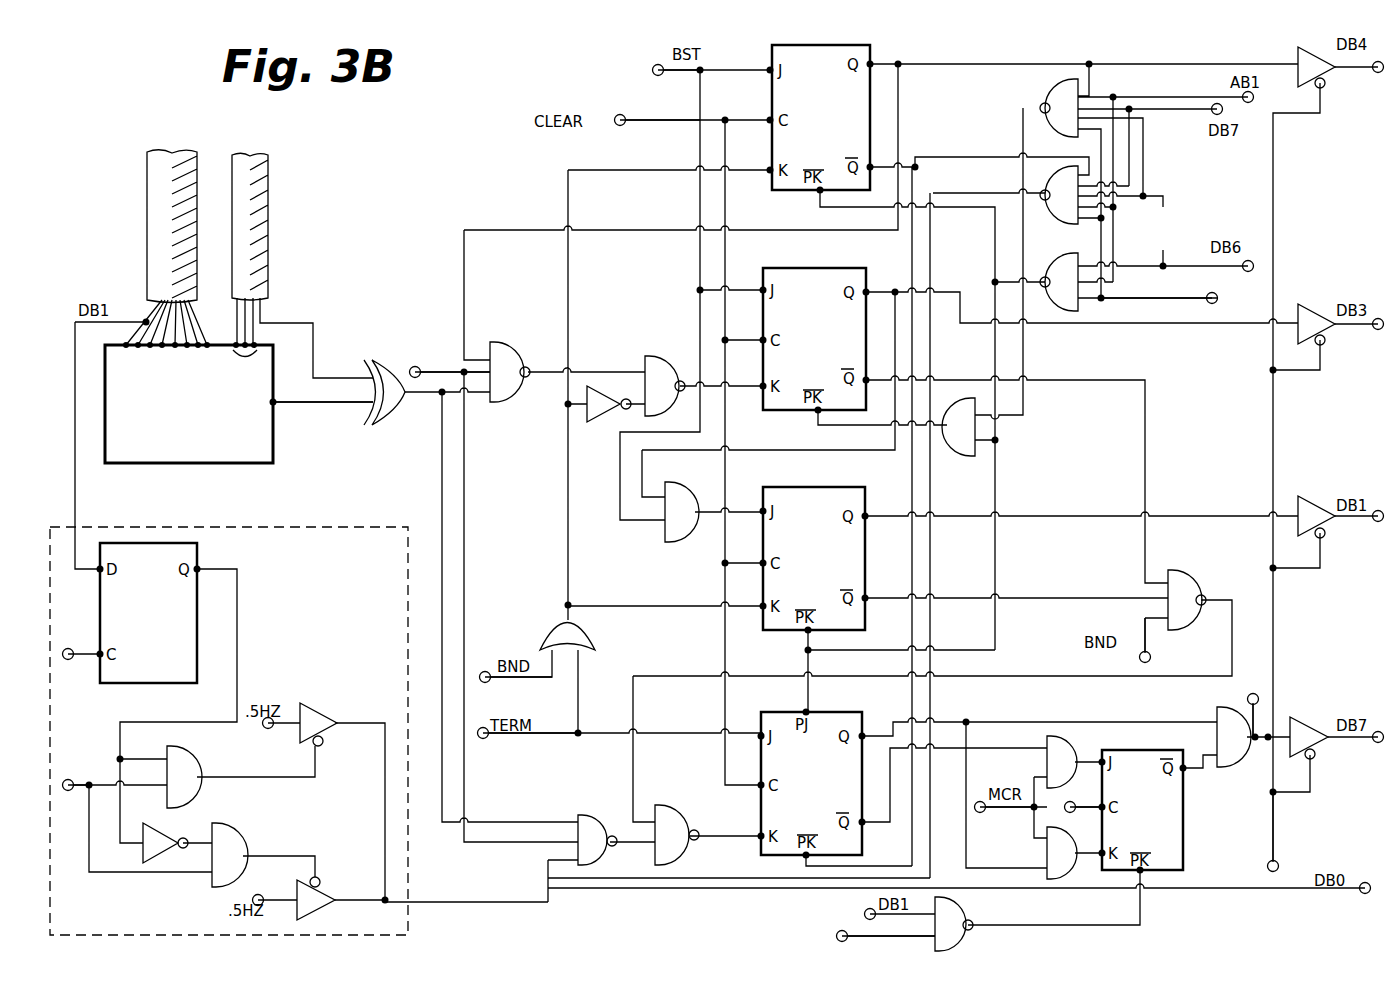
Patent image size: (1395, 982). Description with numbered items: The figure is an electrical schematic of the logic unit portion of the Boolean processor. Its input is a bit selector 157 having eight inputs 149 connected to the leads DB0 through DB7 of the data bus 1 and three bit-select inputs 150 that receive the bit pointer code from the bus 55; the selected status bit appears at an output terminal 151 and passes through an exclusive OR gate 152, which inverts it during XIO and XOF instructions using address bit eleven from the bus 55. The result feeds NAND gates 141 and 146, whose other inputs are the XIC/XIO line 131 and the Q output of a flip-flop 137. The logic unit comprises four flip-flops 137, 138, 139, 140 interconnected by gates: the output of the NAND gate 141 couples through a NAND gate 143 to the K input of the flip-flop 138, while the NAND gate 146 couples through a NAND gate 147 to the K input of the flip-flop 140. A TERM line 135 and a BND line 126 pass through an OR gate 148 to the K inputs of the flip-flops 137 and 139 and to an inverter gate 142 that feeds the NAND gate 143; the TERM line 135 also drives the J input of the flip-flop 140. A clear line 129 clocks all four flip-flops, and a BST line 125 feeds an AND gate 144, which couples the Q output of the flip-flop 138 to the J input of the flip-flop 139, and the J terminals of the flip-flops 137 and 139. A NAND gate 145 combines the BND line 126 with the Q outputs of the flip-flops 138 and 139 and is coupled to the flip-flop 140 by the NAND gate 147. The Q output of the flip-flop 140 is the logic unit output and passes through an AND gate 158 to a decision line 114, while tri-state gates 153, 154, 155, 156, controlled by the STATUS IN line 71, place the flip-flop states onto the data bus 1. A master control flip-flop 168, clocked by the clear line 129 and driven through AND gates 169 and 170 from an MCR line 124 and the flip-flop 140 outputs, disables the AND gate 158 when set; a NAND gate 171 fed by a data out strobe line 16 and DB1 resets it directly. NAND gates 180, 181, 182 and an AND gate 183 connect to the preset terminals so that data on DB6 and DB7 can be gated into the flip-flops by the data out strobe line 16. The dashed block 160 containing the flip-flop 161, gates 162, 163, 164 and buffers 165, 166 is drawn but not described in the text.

The data bus 1 is at (147, 192).
The bus 55 is at (268, 190).
The inputs 149 is at (160, 358).
The bit-select inputs 150 is at (241, 367).
The bit selector 157 is at (238, 474).
The output terminal 151 is at (276, 402).
The exclusive OR gate 152 is at (390, 418).
The XIC/XIO line 131 is at (416, 366).
The NAND gate 141 is at (525, 318).
The inverter gate 142 is at (594, 422).
The NAND gate 143 is at (668, 356).
The AND gate 144 is at (670, 545).
The BST line 125 is at (652, 66).
The clear line 129 is at (624, 115).
The flip-flop 137 is at (838, 112).
The flip-flop 138 is at (832, 334).
The flip-flop 139 is at (832, 556).
The main decision flip-flop 140 is at (830, 780).
The OR gate 148 is at (598, 632).
The BND line 126 is at (489, 670).
The TERM line 135 is at (486, 740).
The NAND gate 146 is at (590, 812).
The NAND gate 147 is at (700, 794).
The D flip-flop 161 is at (160, 626).
The STATUS IN line 71 is at (80, 775).
The AND gate 162 is at (198, 756).
The inverter 163 is at (170, 830).
The AND gate 164 is at (243, 828).
The tri-state buffer 165 is at (322, 714).
The tri-state buffer 166 is at (322, 878).
The blink circuit 160 is at (355, 518).
The NAND gate 180 is at (1052, 92).
The NAND gate 181 is at (1066, 226).
The NAND gate 182 is at (1076, 312).
The AND gate 183 is at (958, 460).
The NAND gate 145 is at (1186, 572).
The tri-state gate 153 is at (1296, 56).
The tri-state gate 154 is at (1310, 318).
The tri-state gate 155 is at (1310, 508).
The tri-state gate 156 is at (1306, 728).
The decision line 114 is at (1248, 700).
The AND gate 158 is at (1236, 770).
The AND gate 169 is at (1075, 742).
The master control flip-flop 168 is at (1160, 832).
The AND gate 170 is at (1068, 874).
The NAND gate 171 is at (968, 904).
The MCR line 124 is at (982, 814).
The data out strobe line 16 is at (1220, 298).